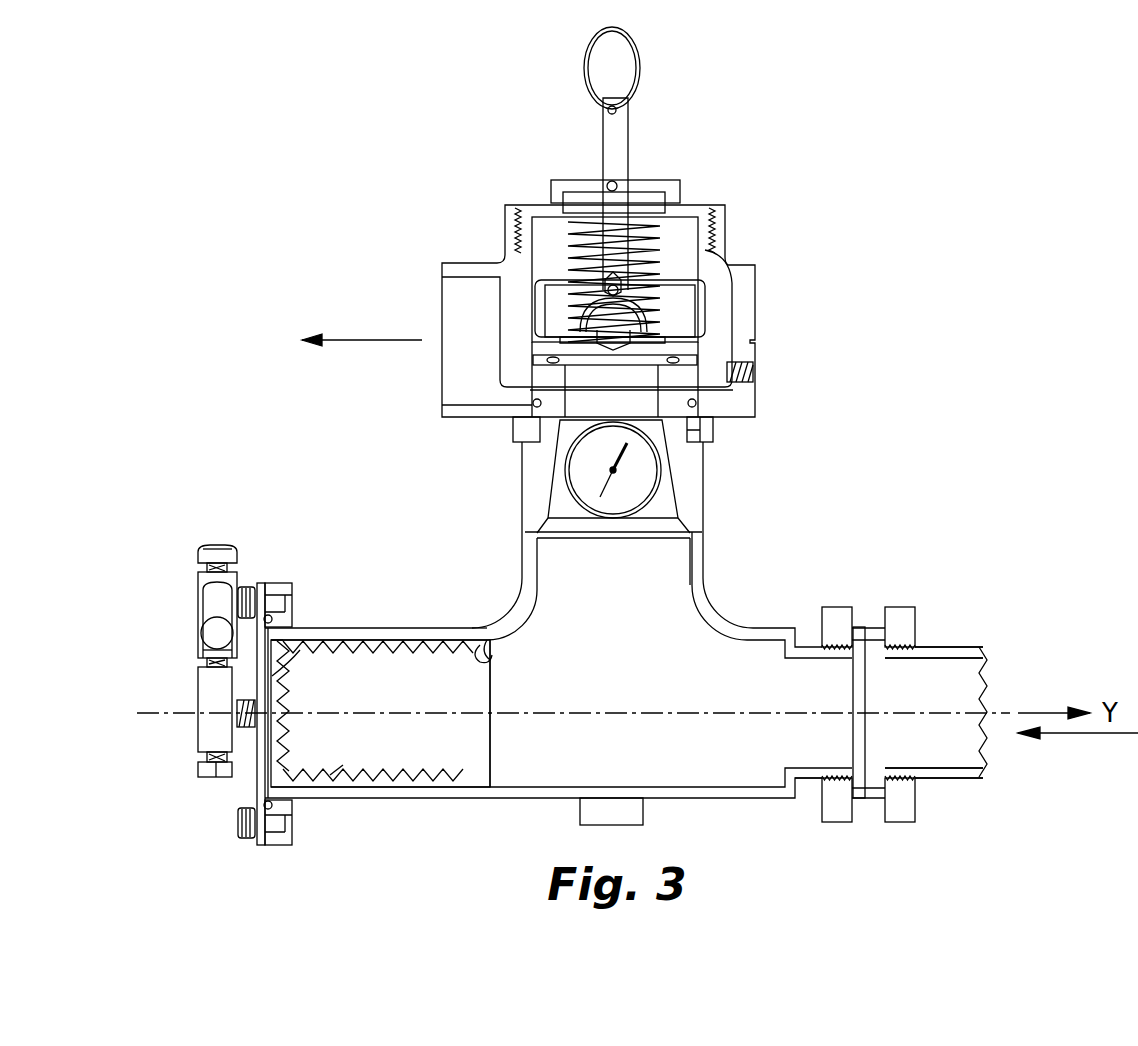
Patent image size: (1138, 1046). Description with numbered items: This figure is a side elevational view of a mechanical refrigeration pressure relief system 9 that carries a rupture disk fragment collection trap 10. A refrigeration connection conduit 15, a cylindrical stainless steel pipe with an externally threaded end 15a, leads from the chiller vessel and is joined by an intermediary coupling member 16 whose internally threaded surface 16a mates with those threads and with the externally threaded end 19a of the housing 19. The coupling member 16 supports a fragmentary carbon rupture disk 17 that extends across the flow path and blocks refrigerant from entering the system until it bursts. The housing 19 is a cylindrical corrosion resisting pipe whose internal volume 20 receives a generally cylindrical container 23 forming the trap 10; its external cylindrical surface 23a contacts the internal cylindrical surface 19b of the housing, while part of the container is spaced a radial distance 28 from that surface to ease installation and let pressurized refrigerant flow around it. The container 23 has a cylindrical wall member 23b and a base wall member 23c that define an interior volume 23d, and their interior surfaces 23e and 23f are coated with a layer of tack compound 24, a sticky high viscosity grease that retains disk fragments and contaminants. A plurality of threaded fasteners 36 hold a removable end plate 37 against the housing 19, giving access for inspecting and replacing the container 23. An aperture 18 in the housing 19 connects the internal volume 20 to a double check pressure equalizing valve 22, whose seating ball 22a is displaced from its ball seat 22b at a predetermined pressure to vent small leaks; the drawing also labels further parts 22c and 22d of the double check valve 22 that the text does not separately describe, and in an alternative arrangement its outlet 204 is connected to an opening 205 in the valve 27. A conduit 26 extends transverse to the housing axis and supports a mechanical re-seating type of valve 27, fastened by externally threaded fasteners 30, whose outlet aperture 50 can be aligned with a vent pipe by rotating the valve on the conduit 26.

The mechanical refrigeration pressure relief system 9 is at (740, 582).
The rupture disk fragment collection trap 10 is at (500, 638).
The refrigeration connection conduit 15 is at (975, 647).
The externally threaded end 15a is at (920, 655).
The intermediary coupling member 16 is at (828, 607).
The internally threaded surface 16a is at (832, 635).
The fragmentary carbon rupture disk 17 is at (866, 703).
The aperture 18 is at (255, 727).
The housing 19 is at (672, 798).
The externally threaded end 19a is at (828, 790).
The internal cylindrical surface 19b is at (480, 647).
The internal volume 20 is at (553, 748).
The double check pressure equalizing valve 22 is at (200, 575).
The seating ball 22a is at (200, 617).
The ball seat 22b is at (200, 652).
The threaded neck 22c is at (240, 580).
The cap 22d is at (200, 565).
The cylindrical container 23 is at (452, 762).
The external cylindrical surface 23a is at (397, 640).
The cylindrical wall member 23b is at (377, 777).
The base wall member 23c is at (270, 747).
The interior volume 23d is at (414, 705).
The interior surface 23e is at (478, 652).
The interior surface 23f is at (272, 676).
The tack compound 24 is at (335, 772).
The conduit 26 is at (703, 507).
The mechanical re-seating type of valve 27 is at (747, 238).
The radial distance 28 is at (328, 640).
The externally threaded fasteners 30 is at (713, 430).
The threaded fasteners 36 is at (255, 590).
The removable end plate 37 is at (257, 790).
The outlet aperture 50 is at (448, 285).
The outlet 204 is at (230, 545).
The opening 205 is at (755, 370).